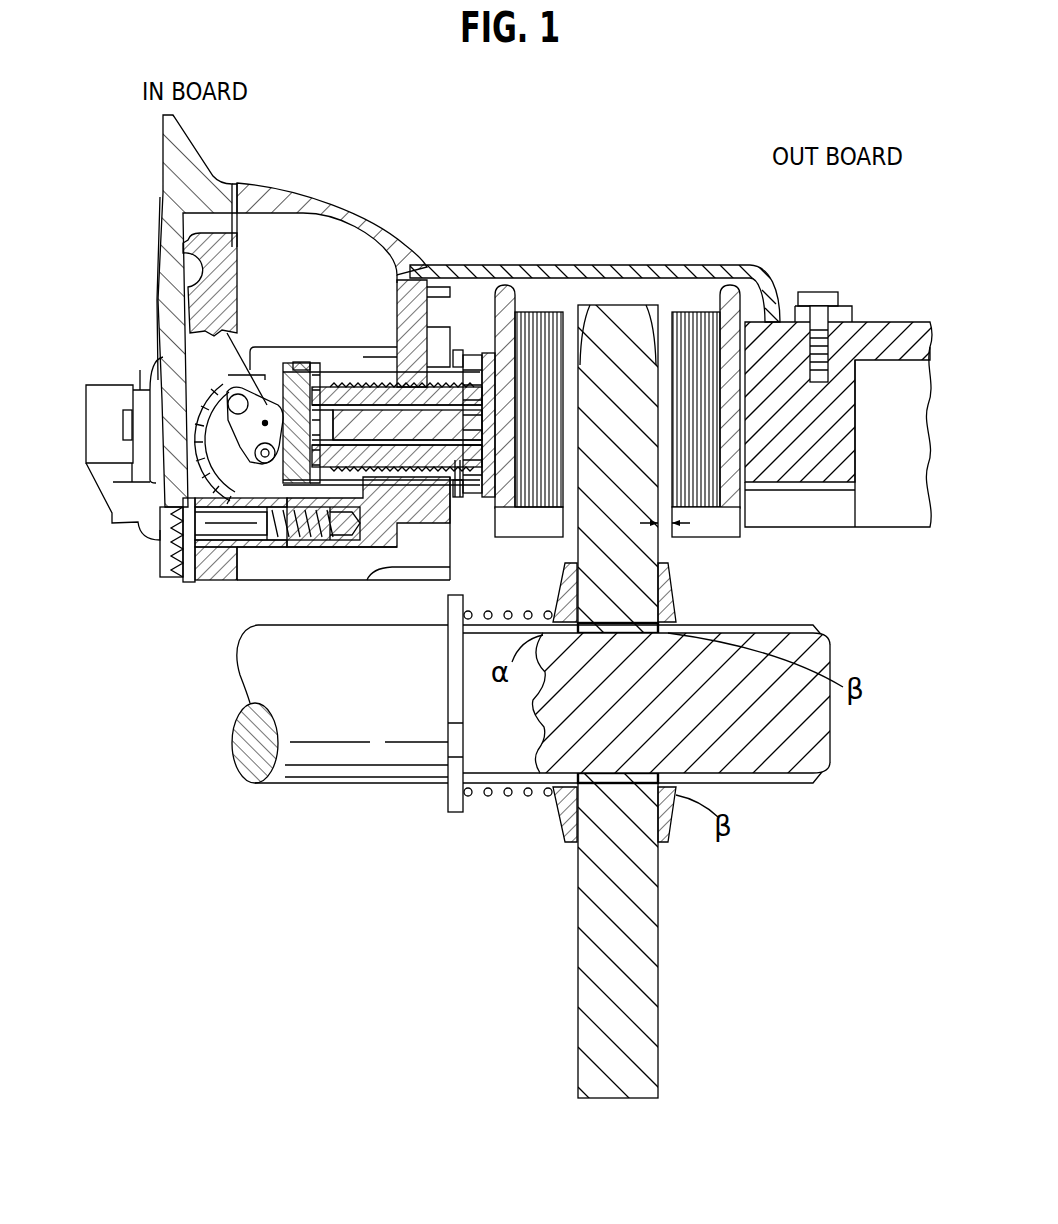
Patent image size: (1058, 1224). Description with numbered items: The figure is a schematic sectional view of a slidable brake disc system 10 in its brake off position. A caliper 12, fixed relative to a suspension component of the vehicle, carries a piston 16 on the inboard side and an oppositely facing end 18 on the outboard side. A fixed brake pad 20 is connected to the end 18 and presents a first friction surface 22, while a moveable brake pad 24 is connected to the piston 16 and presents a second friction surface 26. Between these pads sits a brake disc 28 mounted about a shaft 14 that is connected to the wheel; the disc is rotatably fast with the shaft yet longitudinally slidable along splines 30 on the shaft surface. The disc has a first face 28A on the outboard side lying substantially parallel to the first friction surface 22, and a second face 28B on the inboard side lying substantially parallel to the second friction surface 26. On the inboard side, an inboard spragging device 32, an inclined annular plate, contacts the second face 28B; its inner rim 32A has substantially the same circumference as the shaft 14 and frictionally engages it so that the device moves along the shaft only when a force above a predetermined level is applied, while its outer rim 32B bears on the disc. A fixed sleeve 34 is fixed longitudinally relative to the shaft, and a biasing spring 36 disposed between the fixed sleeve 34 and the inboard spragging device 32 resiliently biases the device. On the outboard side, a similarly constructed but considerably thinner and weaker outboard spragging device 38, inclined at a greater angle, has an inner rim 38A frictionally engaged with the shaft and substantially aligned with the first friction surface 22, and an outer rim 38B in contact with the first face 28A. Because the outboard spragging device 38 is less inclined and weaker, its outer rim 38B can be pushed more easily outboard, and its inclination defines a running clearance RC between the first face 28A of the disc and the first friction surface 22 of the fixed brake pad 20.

The brake disc system 10 is at (860, 265).
The caliper 12 is at (134, 315).
The shaft 14 is at (242, 802).
The piston 16 is at (362, 385).
The end 18 is at (775, 345).
The fixed brake pad 20 is at (697, 290).
The first friction surface 22 is at (676, 288).
The moveable brake pad 24 is at (535, 290).
The second friction surface 26 is at (562, 290).
The brake disc 28 is at (600, 528).
The first face 28A is at (648, 290).
The second face 28B is at (588, 292).
The splines 30 is at (810, 630).
The inboard spragging device 32 is at (551, 850).
The inner rim 32A is at (553, 805).
The outer rim 32B is at (564, 838).
The fixed sleeve 34 is at (447, 798).
The biasing spring 36 is at (502, 793).
The outboard spragging device 38 is at (697, 590).
The inner rim 38A is at (672, 617).
The outer rim 38B is at (672, 568).
The running clearance RC is at (667, 530).